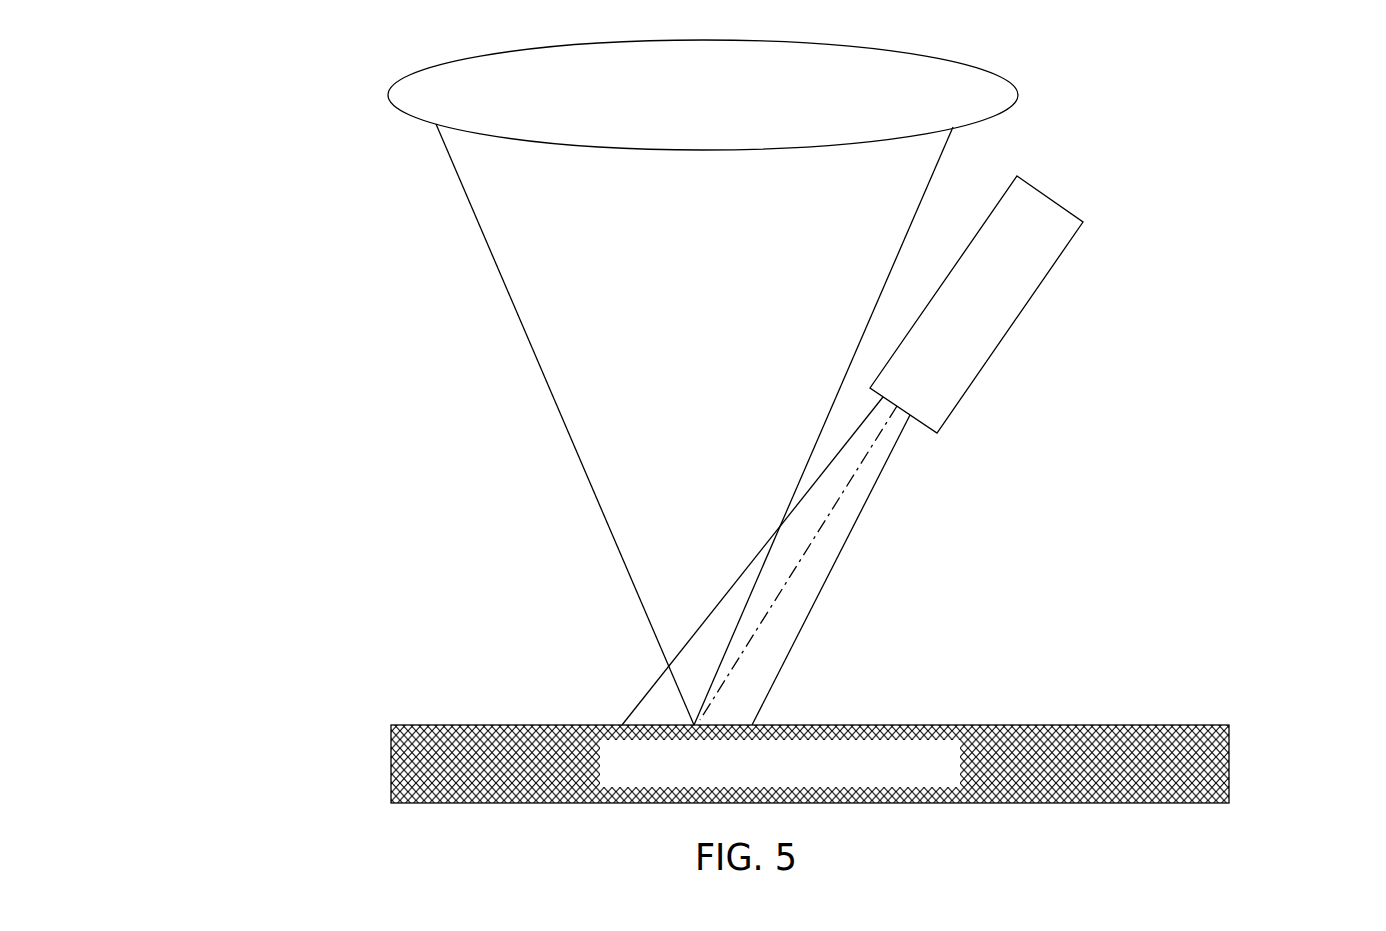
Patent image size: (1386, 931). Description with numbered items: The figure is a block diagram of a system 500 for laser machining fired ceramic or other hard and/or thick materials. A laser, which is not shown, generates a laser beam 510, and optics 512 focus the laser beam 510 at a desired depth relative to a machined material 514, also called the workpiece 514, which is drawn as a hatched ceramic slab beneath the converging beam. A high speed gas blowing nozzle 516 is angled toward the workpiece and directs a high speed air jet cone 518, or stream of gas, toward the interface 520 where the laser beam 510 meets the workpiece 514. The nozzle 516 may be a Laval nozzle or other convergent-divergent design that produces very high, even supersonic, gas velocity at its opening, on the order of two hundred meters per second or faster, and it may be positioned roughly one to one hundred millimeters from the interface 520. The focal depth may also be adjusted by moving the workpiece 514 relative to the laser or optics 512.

The system 500 is at (315, 122).
The laser beam 510 is at (507, 287).
The optics 512 is at (933, 57).
The machined material 514 is at (1123, 723).
The high speed gas blowing nozzle 516 is at (992, 353).
The air jet cone 518 is at (811, 610).
The interface 520 is at (681, 712).